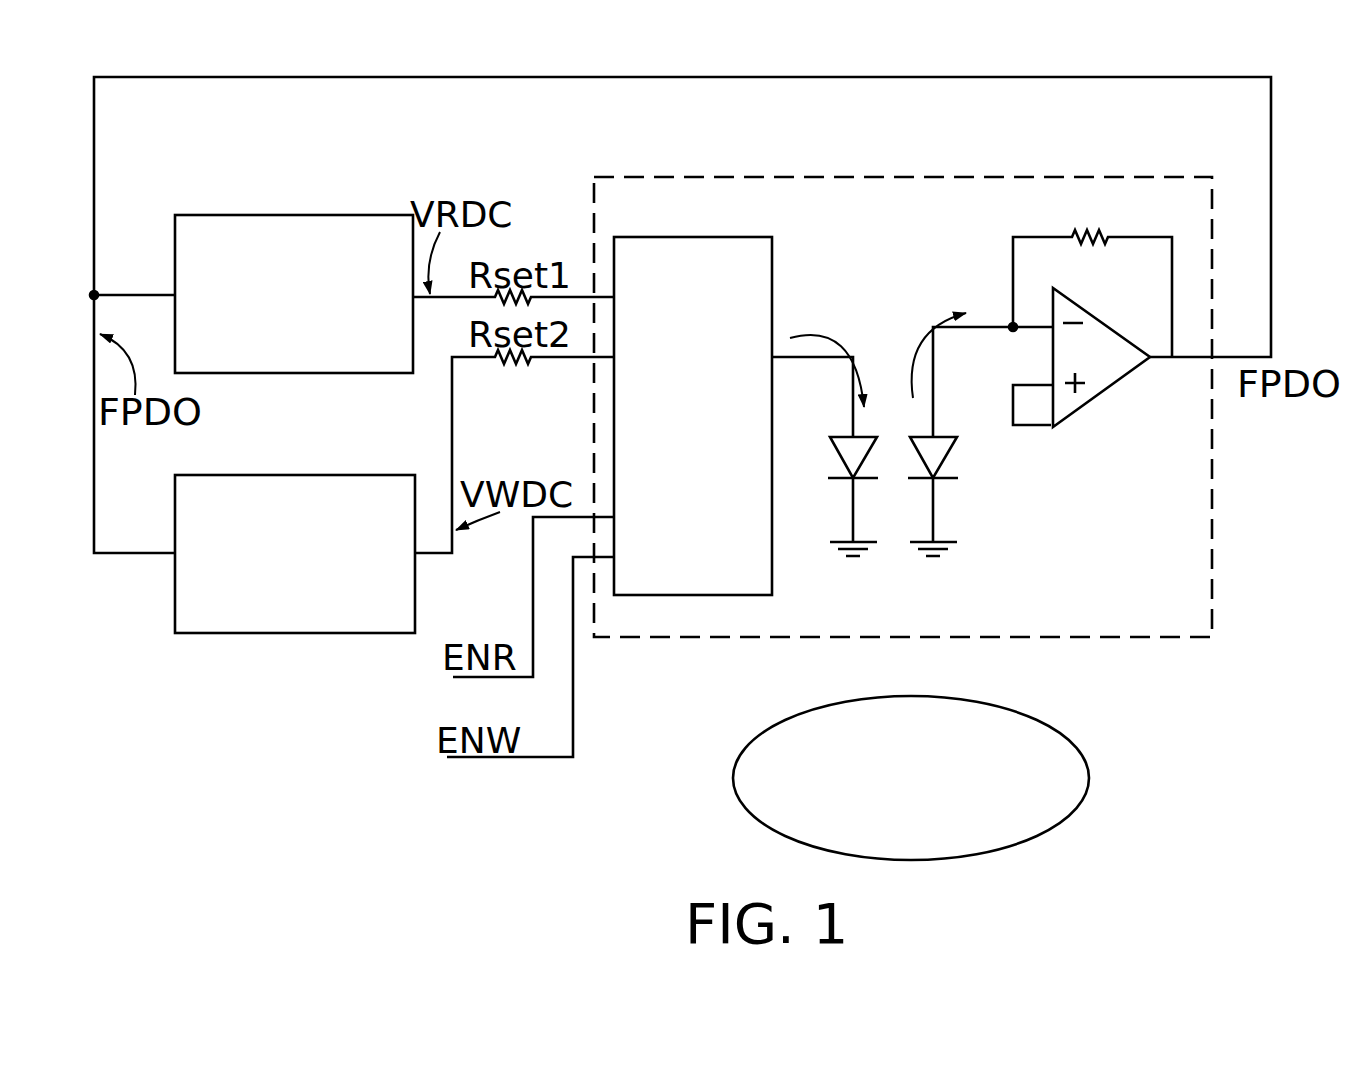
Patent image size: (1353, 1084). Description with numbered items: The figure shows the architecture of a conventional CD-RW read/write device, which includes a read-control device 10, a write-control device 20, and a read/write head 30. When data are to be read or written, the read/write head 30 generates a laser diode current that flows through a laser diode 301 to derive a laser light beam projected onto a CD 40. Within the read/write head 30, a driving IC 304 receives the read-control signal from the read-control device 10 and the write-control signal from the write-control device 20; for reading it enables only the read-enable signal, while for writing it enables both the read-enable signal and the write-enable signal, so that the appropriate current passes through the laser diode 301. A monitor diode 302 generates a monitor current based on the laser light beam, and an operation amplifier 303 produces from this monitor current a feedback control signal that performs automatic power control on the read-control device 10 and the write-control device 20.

The read-control device 10 is at (334, 212).
The write-control device 20 is at (327, 472).
The read/write head 30 is at (931, 175).
The CD 40 is at (1094, 785).
The laser diode 301 is at (828, 460).
The monitor diode 302 is at (960, 456).
The operation amplifier 303 is at (1097, 402).
The driving IC 304 is at (690, 600).